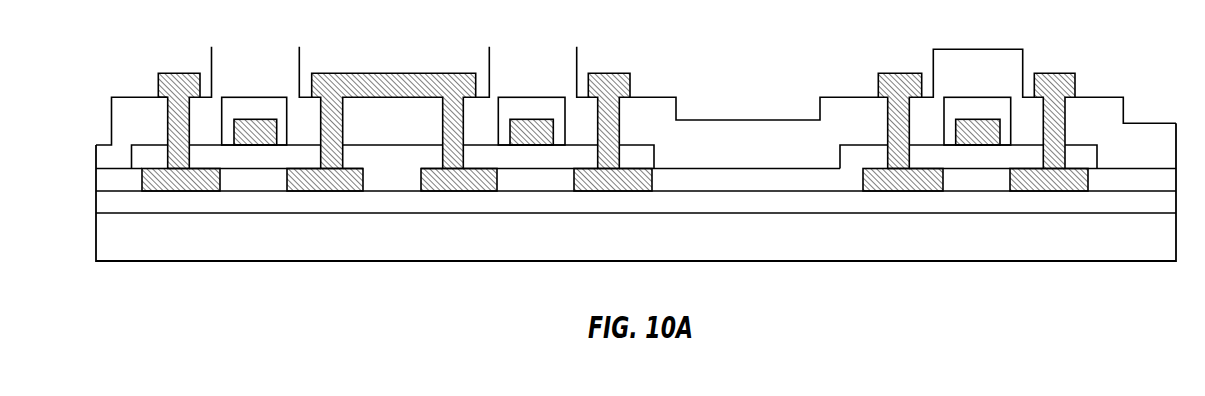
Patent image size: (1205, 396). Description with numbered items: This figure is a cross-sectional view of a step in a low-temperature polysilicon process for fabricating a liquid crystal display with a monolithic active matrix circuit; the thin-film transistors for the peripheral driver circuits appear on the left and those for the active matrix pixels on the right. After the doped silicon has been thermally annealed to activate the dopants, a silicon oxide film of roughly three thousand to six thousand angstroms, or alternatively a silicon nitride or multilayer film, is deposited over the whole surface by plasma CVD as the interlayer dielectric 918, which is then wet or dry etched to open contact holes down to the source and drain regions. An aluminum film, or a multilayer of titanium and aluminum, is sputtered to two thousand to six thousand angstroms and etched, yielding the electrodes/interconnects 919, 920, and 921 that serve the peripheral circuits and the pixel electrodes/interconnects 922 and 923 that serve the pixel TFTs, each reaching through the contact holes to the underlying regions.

The interlayer dielectric 918 is at (700, 120).
The electrode/interconnect 919 is at (177, 74).
The electrode/interconnect 920 is at (340, 74).
The electrode/interconnect 921 is at (629, 74).
The pixel electrode/interconnect 922 is at (878, 74).
The pixel electrode/interconnect 923 is at (1075, 74).